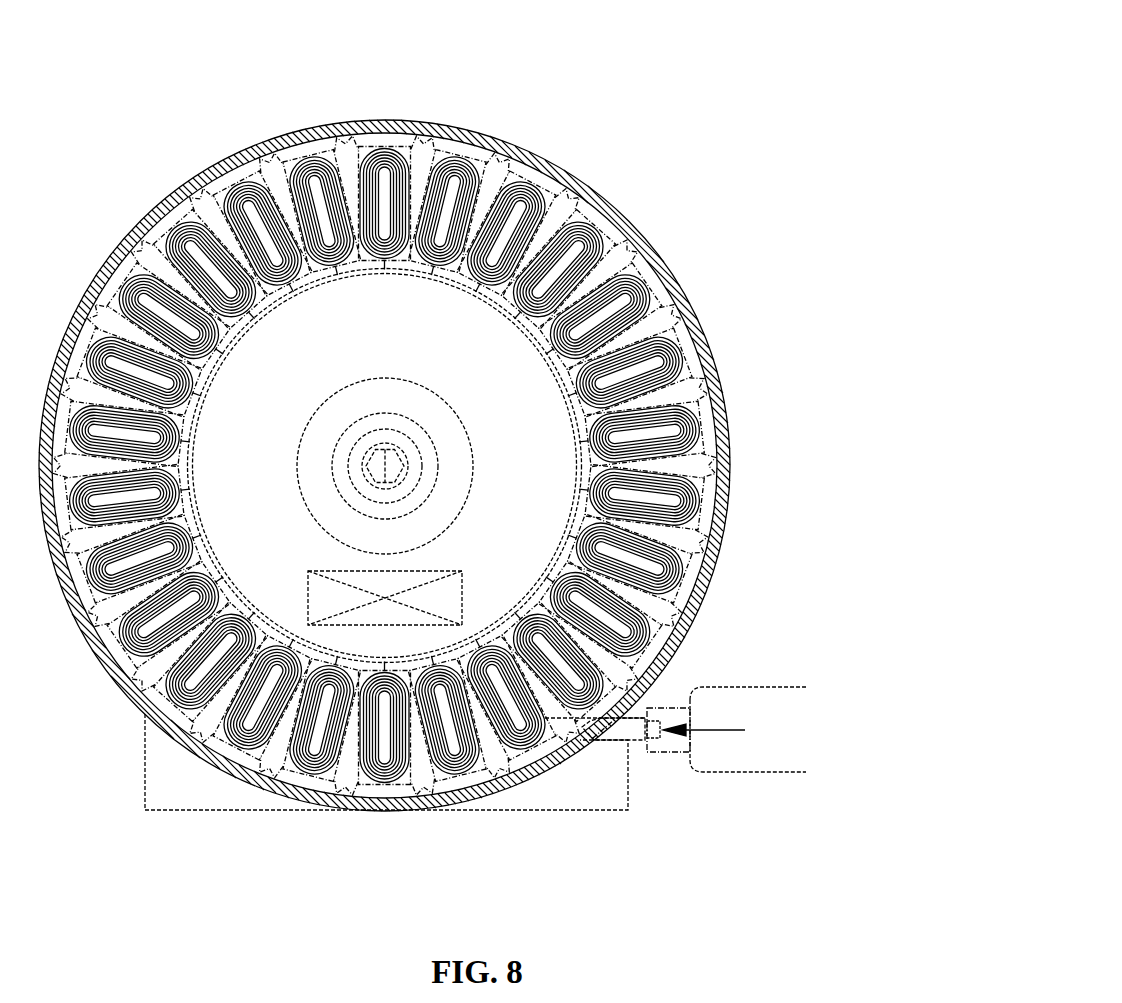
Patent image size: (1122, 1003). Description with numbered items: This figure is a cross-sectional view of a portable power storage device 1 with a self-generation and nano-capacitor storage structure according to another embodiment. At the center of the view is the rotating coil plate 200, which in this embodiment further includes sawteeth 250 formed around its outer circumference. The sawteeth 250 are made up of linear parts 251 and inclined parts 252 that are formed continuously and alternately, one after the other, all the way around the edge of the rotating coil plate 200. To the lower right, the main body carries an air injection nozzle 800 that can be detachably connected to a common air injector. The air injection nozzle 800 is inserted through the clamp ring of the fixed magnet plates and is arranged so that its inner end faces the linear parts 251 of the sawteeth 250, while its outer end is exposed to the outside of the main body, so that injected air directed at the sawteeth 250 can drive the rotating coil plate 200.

The portable power storage device 1 is at (66, 108).
The rotating coil plate 200 is at (357, 158).
The sawteeth 250 is at (860, 402).
The linear parts 251 is at (705, 455).
The inclined parts 252 is at (705, 448).
The air injection nozzle 800 is at (635, 733).